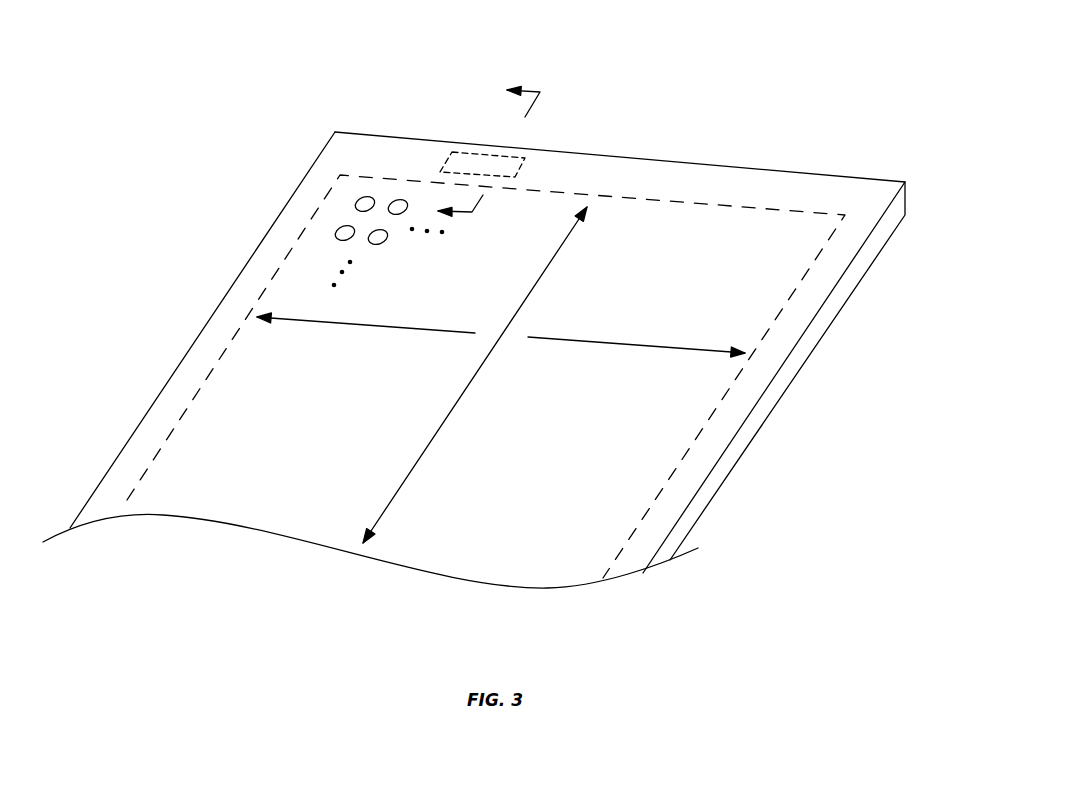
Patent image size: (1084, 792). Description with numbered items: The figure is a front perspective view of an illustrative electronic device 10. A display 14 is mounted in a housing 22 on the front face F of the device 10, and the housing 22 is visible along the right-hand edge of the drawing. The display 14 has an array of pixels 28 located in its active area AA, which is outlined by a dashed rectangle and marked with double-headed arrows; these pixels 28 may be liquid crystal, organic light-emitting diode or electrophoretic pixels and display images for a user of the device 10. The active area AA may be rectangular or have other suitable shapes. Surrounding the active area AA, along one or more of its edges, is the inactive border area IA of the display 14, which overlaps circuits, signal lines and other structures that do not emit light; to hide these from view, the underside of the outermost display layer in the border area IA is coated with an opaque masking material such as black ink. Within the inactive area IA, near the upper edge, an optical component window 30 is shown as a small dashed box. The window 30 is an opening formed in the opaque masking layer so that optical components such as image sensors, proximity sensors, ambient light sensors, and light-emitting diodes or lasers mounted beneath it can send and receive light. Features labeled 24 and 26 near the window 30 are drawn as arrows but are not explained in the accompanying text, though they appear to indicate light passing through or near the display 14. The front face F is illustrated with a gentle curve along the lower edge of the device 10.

The electronic device 10 is at (886, 121).
The display 14 is at (793, 272).
The housing 22 is at (897, 202).
The light 24 is at (537, 102).
The light direction 26 is at (527, 89).
The pixels 28 is at (373, 245).
The optical component window 30 is at (492, 153).
The inactive border area IA is at (715, 172).
The active area AA is at (501, 375).
The front face F is at (500, 550).